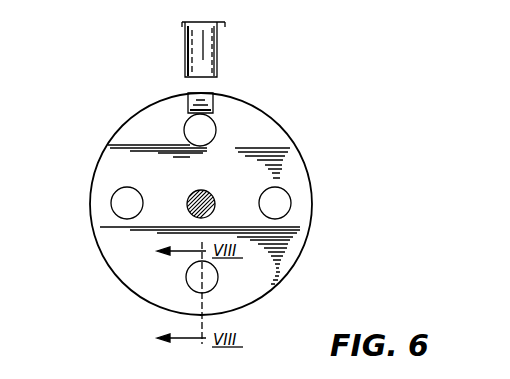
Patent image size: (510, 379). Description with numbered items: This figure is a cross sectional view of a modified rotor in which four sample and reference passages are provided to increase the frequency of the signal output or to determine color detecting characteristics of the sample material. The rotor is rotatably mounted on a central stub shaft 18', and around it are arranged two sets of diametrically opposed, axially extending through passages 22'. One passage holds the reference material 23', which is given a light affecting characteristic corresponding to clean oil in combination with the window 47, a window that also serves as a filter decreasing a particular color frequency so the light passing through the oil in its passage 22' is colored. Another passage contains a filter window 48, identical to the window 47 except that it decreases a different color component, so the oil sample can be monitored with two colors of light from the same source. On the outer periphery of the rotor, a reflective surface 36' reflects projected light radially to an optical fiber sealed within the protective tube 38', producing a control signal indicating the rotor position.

The protective tube 38' is at (232, 49).
The reflective surface 36' is at (238, 93).
The reference material 23' is at (174, 130).
The through passages 22' is at (173, 220).
The filter window 48 is at (125, 207).
The stub shaft 18' is at (202, 186).
The window 47 is at (190, 282).